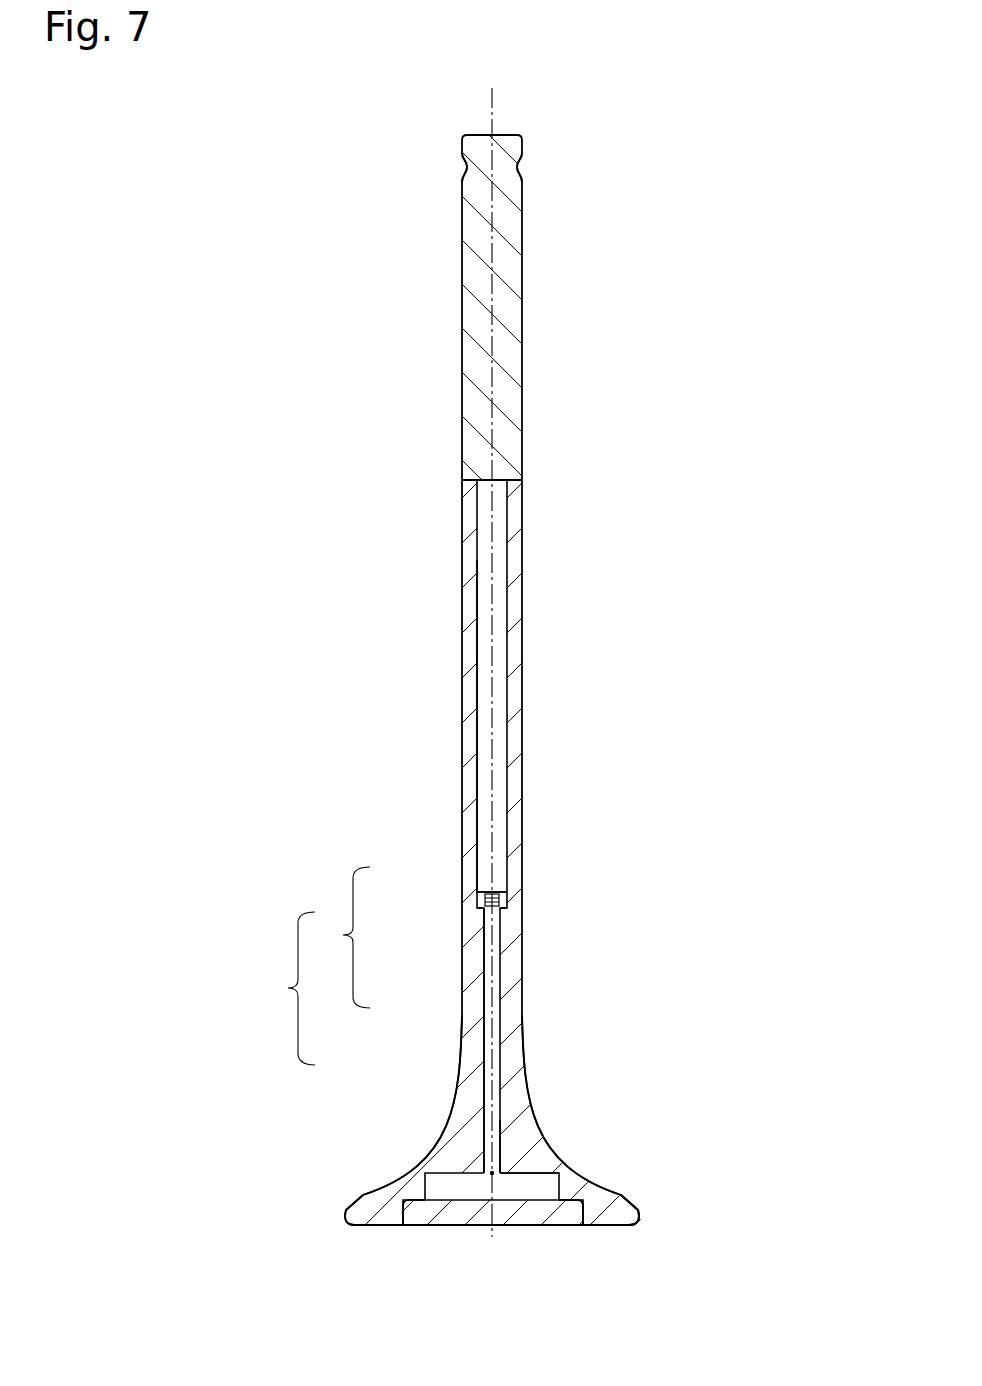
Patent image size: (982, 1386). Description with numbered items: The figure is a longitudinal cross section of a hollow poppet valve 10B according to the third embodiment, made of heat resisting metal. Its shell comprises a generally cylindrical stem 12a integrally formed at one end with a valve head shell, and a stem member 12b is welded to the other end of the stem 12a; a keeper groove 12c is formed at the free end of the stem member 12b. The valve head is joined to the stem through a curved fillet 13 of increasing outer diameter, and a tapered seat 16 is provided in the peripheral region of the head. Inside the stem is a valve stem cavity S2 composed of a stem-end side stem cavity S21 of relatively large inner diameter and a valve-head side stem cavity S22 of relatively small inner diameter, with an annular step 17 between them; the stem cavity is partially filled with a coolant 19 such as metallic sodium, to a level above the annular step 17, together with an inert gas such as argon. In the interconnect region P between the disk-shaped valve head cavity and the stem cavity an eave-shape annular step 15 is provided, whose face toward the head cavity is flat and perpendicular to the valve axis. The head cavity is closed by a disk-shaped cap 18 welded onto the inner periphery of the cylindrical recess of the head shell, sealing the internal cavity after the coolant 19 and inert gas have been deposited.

The hollow poppet valve 10B is at (428, 322).
The keeper groove 12c is at (524, 165).
The stem member 12b is at (524, 311).
The stem 12a is at (524, 588).
The coolant 19 is at (487, 892).
The annular step 17 is at (499, 897).
The stem-end side stem cavity S21 is at (480, 862).
The valve-head side stem cavity S22 is at (482, 997).
The valve stem cavity S2 is at (339, 937).
The interconnect region P is at (491, 1171).
The eave-shape annular step 15 is at (508, 1168).
The curved fillet 13 is at (518, 1162).
The tapered seat 16 is at (642, 1214).
The cap 18 is at (505, 1226).